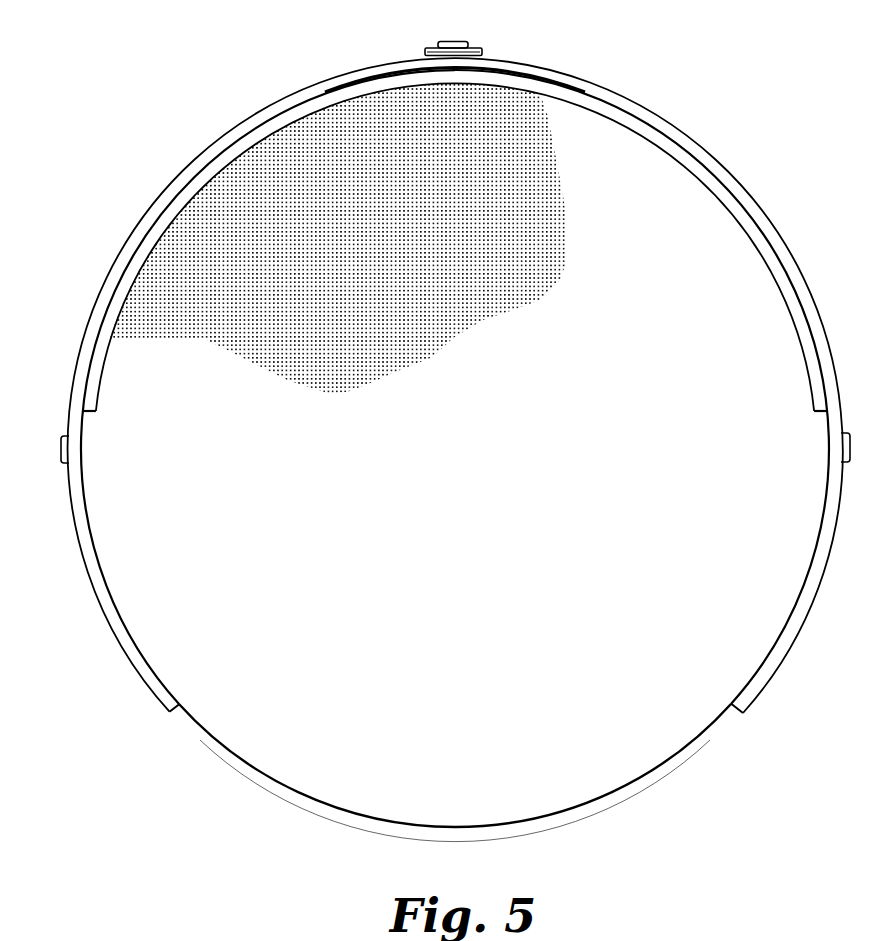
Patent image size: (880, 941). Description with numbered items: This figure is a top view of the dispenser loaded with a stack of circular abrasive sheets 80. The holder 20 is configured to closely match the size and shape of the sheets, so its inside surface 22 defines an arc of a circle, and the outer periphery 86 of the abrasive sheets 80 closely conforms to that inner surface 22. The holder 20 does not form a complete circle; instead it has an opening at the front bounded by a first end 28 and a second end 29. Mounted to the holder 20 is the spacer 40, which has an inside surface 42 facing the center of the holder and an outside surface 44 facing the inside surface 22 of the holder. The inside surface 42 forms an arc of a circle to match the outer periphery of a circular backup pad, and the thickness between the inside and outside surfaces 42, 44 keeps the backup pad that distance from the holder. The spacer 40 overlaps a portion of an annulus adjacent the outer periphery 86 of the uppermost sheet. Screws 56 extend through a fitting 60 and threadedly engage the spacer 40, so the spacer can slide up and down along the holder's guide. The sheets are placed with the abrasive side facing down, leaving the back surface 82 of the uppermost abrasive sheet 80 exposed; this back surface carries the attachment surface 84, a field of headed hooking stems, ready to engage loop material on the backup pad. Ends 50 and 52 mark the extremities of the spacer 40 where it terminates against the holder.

The holder 20 is at (455, 395).
The inside surface 22 is at (781, 598).
The first end 28 is at (739, 714).
The second end 29 is at (175, 712).
The spacer 40 is at (454, 264).
The inside surface 42 is at (763, 260).
The outside surface 44 is at (650, 125).
The inner leg end 50 is at (814, 413).
The inner leg end 52 is at (96, 413).
The screws 56 is at (453, 30).
The fitting 60 is at (433, 43).
The abrasive sheets 80 is at (455, 473).
The back surface 82 is at (462, 622).
The attachment surface 84 is at (397, 356).
The outer periphery 86 is at (307, 799).